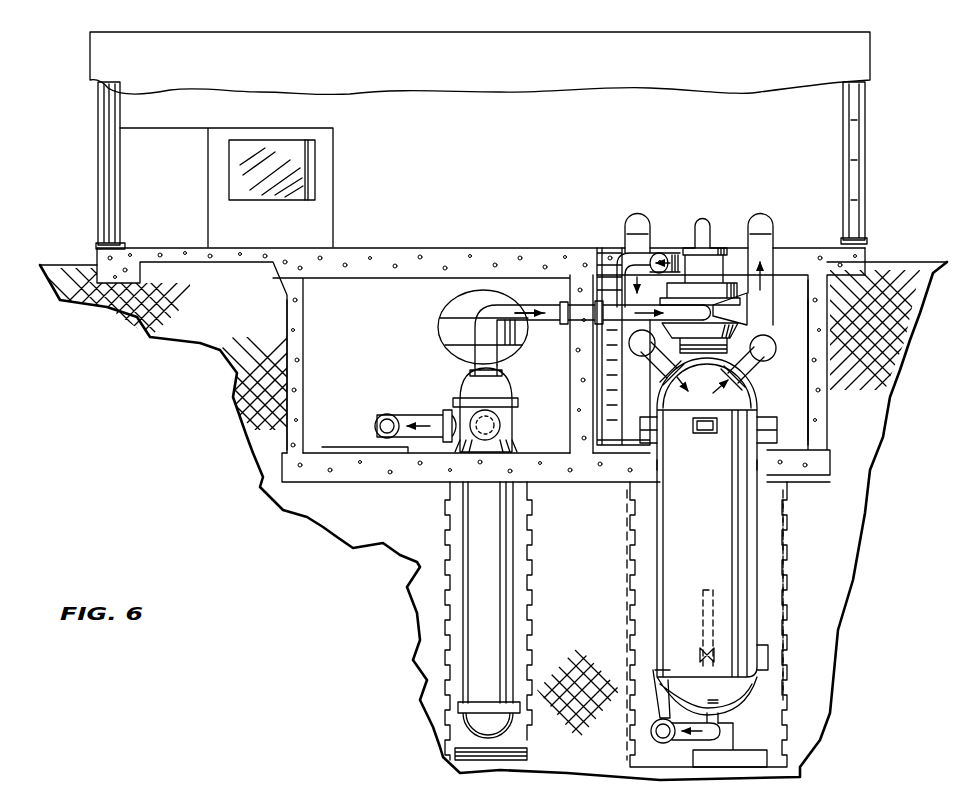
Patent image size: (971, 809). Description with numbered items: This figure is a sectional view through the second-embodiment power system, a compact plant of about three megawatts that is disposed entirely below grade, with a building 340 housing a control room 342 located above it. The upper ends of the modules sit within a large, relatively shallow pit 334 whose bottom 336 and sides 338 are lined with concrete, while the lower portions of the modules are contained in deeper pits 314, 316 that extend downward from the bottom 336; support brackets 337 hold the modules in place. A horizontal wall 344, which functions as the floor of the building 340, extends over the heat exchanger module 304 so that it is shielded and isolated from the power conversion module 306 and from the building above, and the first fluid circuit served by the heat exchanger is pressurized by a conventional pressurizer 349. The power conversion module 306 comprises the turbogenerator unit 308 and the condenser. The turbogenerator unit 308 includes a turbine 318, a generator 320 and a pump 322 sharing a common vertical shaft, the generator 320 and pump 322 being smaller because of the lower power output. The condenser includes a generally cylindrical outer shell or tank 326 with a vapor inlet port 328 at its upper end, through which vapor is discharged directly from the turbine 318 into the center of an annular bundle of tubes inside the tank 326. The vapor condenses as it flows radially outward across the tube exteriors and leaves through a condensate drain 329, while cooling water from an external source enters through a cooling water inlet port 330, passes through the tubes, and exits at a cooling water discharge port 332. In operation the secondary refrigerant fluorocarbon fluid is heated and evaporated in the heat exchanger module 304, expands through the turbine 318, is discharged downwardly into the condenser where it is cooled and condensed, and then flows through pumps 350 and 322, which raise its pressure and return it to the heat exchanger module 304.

The heat exchanger module 304 is at (505, 593).
The power conversion module 306 is at (768, 588).
The turbogenerator unit 308 is at (712, 268).
The deeper pit 314 is at (517, 528).
The deeper pit 316 is at (767, 557).
The turbine 318 is at (775, 335).
The generator 320 is at (780, 270).
The pump 322 is at (685, 250).
The outer shell or tank 326 is at (717, 520).
The vapor inlet port 328 is at (702, 379).
The condensate drain 329 is at (720, 718).
The cooling water inlet port 330 is at (683, 372).
The cooling water discharge port 332 is at (762, 378).
The pit 334 is at (833, 383).
The bottom 336 is at (332, 482).
The support brackets 337 is at (512, 442).
The sides 338 is at (287, 437).
The building 340 is at (95, 193).
The control room 342 is at (333, 205).
The horizontal wall 344 is at (330, 286).
The pressurizer 349 is at (450, 358).
The pump 350 is at (727, 738).